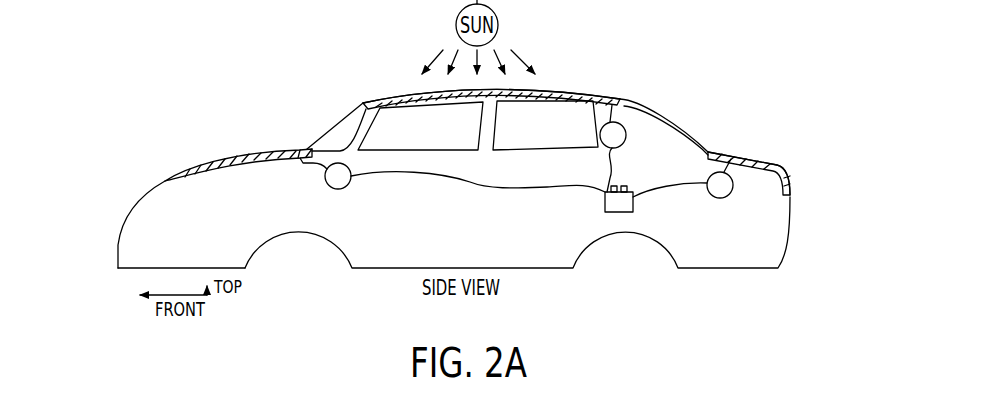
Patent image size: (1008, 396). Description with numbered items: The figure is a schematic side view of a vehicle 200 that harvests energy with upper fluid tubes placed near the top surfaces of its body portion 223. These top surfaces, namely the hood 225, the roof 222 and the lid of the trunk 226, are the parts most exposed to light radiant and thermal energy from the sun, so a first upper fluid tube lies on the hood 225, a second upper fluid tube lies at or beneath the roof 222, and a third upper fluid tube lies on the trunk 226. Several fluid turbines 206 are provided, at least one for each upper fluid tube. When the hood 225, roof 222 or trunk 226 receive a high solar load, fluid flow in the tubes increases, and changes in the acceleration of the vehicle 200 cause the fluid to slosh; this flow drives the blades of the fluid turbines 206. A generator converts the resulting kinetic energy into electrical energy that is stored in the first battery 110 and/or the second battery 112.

The vehicle 200 is at (110, 192).
The roof 222 is at (375, 78).
The hood 225 is at (292, 143).
The trunk 226 is at (723, 156).
The fluid turbines 206 is at (338, 190).
The first battery 110 is at (632, 229).
The second battery 112 is at (620, 213).
The body portion 223 is at (155, 260).